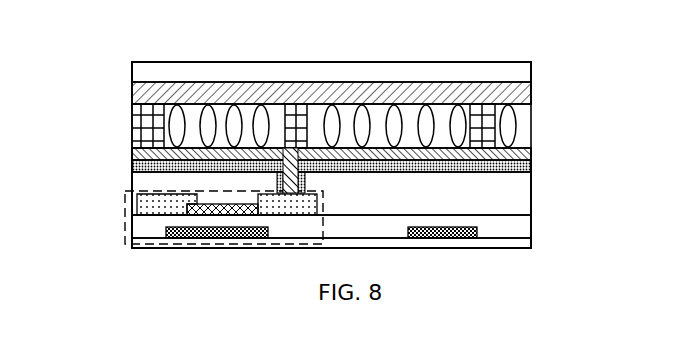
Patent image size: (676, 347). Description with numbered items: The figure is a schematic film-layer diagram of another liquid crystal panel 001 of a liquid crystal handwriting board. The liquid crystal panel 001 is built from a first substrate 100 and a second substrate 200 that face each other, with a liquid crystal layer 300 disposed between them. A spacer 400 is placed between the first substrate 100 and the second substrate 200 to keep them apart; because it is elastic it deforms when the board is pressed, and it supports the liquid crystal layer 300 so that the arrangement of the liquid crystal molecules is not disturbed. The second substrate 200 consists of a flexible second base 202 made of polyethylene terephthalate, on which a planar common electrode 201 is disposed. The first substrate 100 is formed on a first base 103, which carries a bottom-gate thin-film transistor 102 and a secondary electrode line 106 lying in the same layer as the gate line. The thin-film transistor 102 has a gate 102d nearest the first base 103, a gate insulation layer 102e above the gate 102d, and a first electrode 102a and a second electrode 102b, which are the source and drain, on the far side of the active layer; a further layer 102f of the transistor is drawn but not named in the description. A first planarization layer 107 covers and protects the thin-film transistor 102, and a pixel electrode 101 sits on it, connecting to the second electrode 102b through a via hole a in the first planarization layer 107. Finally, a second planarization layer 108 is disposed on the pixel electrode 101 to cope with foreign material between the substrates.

The liquid crystal panel 001 is at (74, 24).
The second substrate 200 is at (587, 65).
The second base 202 is at (505, 78).
The common electrode 201 is at (508, 93).
The spacer 400 is at (489, 117).
The liquid crystal layer 300 is at (515, 137).
The first substrate 100 is at (587, 150).
The second planarization layer 108 is at (508, 155).
The pixel electrode 101 is at (508, 170).
The first planarization layer 107 is at (506, 195).
The secondary electrode line 106 is at (482, 230).
The first base 103 is at (508, 243).
The thin-film transistor 102 is at (363, 202).
The first electrode 102a is at (140, 205).
The second electrode 102b is at (266, 202).
The gate insulation layer 102e is at (219, 209).
The insulating layer 102f is at (141, 227).
The gate 102d is at (270, 230).
The via hole a is at (308, 187).